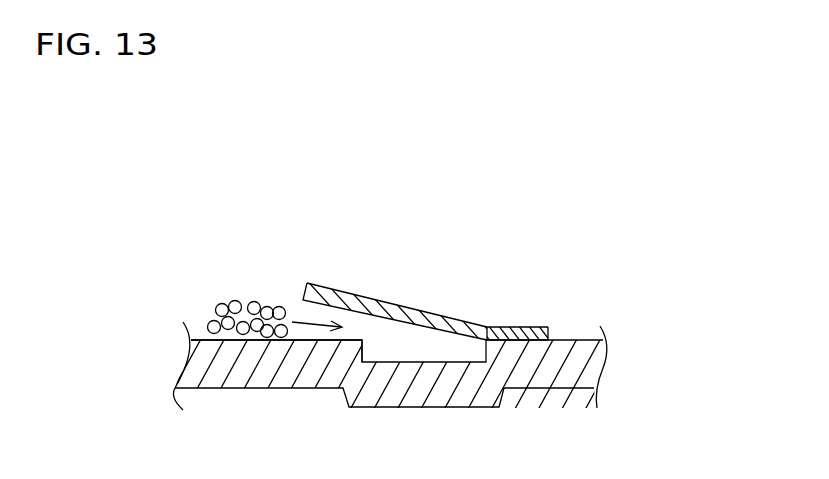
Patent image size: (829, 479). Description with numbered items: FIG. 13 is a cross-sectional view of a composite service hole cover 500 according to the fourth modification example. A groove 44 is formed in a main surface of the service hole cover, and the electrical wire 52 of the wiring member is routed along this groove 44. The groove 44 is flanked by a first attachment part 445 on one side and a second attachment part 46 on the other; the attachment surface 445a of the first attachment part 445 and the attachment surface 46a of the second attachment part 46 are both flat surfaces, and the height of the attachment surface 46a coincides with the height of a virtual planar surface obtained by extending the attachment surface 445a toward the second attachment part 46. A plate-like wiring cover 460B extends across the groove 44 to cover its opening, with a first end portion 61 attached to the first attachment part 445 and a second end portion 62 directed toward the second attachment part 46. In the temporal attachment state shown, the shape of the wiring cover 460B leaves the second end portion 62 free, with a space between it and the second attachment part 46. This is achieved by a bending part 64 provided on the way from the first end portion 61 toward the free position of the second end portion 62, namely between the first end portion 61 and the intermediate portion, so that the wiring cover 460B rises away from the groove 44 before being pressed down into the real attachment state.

The composite service hole cover 500 is at (230, 190).
The groove 44 is at (418, 357).
The second attachment part 46 is at (276, 385).
The attachment surface 46a is at (296, 331).
The electrical wire 52 is at (219, 308).
The second end portion 62 is at (325, 284).
The wiring cover 460B is at (416, 299).
The bending part 64 is at (489, 325).
The first end portion 61 is at (523, 326).
The first attachment part 445 is at (560, 307).
The attachment surface 445a is at (531, 326).